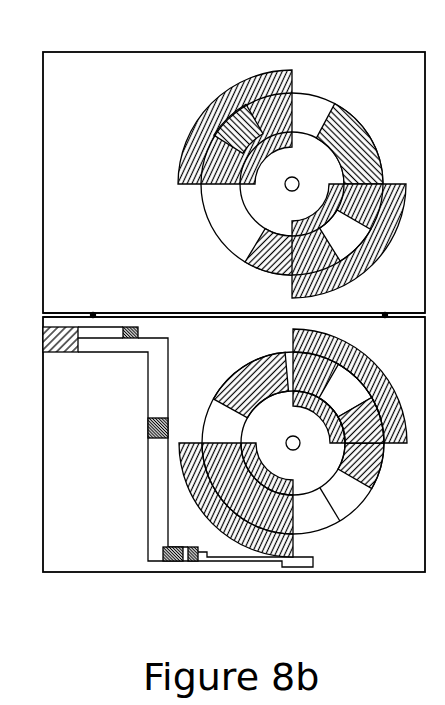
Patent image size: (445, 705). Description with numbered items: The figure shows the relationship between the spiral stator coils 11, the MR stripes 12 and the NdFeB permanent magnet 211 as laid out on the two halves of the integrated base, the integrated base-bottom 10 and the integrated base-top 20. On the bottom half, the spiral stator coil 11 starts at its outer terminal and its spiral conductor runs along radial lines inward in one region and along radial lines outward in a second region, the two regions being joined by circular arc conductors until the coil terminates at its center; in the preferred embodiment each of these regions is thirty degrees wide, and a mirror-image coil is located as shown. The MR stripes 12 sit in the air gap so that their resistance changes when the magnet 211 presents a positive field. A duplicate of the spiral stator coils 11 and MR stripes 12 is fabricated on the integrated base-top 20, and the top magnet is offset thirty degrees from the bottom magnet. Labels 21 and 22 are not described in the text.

The integrated base-bottom 10 is at (102, 435).
The spiral stator coil 11 is at (178, 470).
The MR stripe 12 is at (293, 450).
The integrated base-top 20 is at (112, 213).
The quadrant electrode 21 is at (281, 153).
The top electrode ring 22 is at (303, 169).
The NdFeB permanent magnet 211 is at (252, 296).